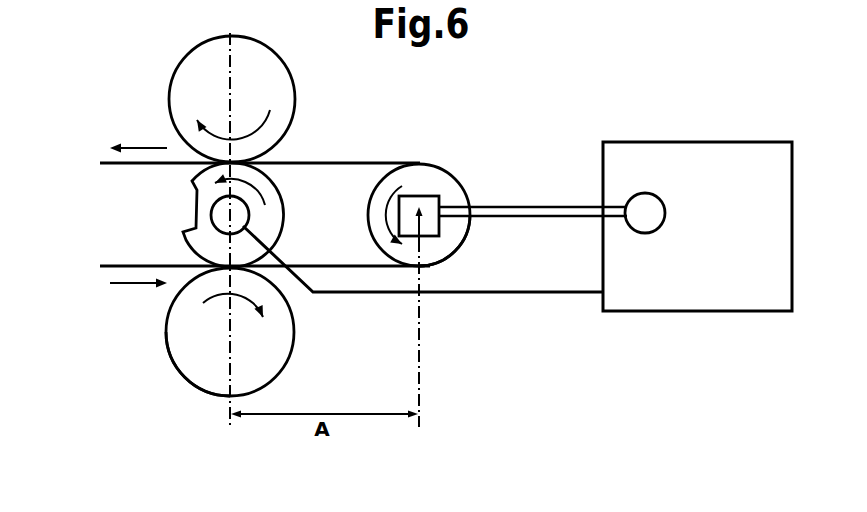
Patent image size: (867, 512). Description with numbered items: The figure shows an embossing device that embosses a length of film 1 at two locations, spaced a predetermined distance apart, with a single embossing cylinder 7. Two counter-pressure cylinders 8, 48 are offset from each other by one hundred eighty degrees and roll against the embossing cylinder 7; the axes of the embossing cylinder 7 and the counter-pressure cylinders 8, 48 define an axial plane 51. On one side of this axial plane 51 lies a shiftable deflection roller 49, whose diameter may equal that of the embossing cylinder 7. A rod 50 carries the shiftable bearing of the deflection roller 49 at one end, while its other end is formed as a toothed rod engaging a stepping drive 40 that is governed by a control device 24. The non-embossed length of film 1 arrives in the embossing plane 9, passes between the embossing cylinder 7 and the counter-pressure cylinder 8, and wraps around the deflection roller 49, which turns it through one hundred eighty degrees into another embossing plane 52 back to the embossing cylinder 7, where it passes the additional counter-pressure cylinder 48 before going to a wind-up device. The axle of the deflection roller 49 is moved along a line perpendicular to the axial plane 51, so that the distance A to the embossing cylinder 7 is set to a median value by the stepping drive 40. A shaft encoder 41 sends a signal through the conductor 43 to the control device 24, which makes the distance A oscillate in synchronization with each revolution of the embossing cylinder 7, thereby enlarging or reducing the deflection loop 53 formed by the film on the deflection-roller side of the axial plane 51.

The length of film 1 is at (128, 163).
The embossing cylinder 7 is at (260, 200).
The counter-pressure cylinder 8 is at (278, 335).
The embossing plane 9 is at (340, 268).
The control device 24 is at (633, 162).
The stepping drive 40 is at (628, 210).
The shaft encoder 41 is at (248, 220).
The conductor 43 is at (575, 292).
The additional counter-pressure cylinder 48 is at (272, 88).
The deflection roller 49 is at (440, 178).
The rod 50 is at (507, 207).
The axial plane 51 is at (226, 373).
The embossing plane 52 is at (352, 163).
The deflection loop 53 is at (457, 252).